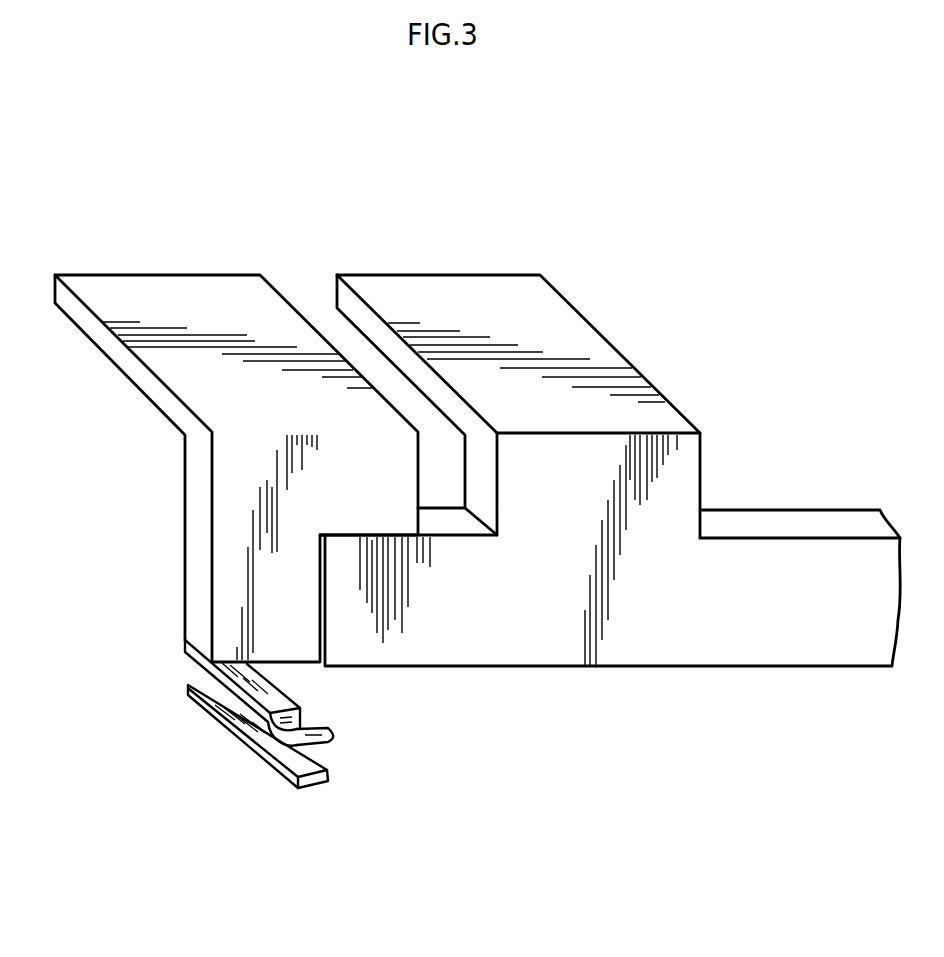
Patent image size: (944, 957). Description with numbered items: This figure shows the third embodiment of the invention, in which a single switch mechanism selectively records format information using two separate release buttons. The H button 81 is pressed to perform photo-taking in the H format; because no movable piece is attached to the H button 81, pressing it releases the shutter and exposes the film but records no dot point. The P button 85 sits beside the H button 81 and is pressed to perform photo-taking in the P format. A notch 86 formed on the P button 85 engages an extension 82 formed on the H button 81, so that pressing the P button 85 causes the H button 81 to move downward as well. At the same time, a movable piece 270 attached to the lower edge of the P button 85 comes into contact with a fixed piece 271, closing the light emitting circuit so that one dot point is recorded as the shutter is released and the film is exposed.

The P button 85 is at (212, 303).
The H button 81 is at (505, 305).
The extension 82 is at (430, 608).
The notch 86 is at (373, 580).
The movable piece 270 is at (290, 690).
The fixed piece 271 is at (313, 783).